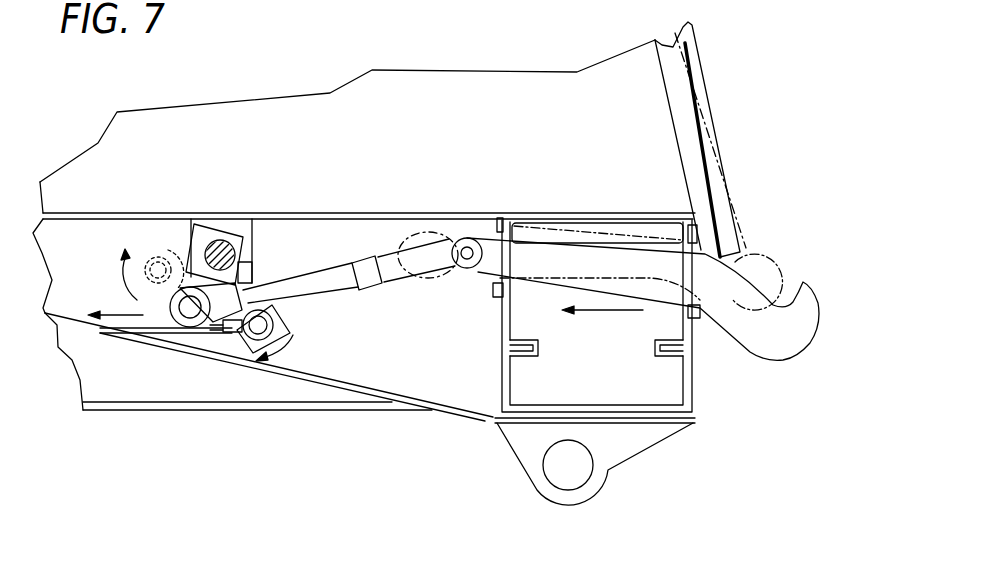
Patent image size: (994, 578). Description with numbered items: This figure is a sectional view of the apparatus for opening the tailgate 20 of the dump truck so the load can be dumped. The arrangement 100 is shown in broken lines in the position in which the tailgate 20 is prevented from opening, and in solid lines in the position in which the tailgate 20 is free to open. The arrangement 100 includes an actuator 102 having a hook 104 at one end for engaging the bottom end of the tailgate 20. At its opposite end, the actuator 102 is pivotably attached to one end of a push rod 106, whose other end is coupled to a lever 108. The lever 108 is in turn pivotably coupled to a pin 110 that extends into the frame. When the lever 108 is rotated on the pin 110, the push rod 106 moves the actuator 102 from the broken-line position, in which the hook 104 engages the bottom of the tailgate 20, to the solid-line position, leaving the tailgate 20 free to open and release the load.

The tailgate 20 is at (712, 117).
The arrangement 100 is at (304, 303).
The actuator 102 is at (490, 262).
The hook 104 is at (788, 338).
The push rod 106 is at (318, 280).
The lever 108 is at (258, 255).
The pin 110 is at (222, 242).